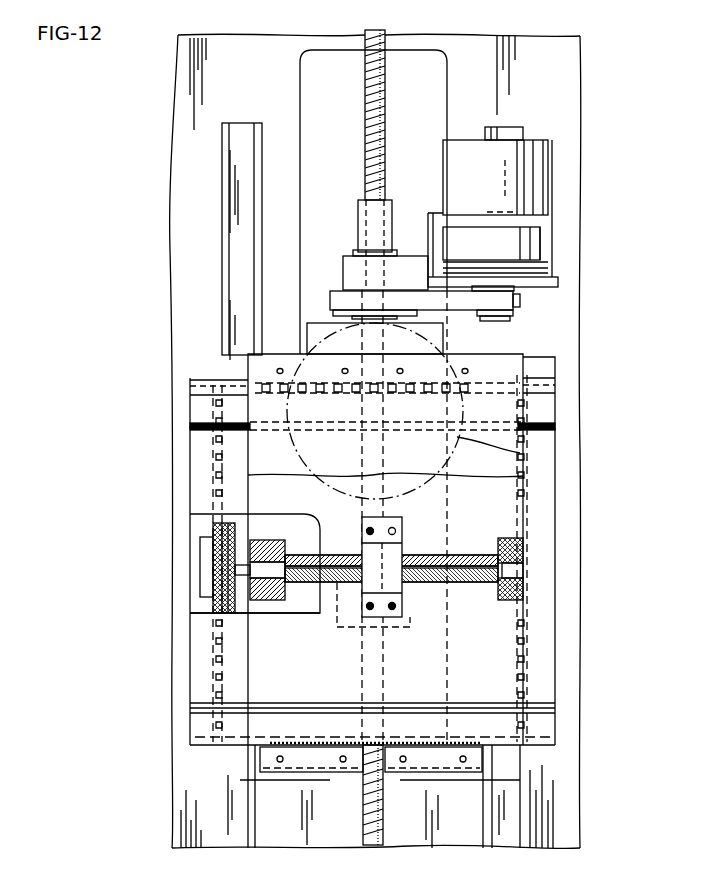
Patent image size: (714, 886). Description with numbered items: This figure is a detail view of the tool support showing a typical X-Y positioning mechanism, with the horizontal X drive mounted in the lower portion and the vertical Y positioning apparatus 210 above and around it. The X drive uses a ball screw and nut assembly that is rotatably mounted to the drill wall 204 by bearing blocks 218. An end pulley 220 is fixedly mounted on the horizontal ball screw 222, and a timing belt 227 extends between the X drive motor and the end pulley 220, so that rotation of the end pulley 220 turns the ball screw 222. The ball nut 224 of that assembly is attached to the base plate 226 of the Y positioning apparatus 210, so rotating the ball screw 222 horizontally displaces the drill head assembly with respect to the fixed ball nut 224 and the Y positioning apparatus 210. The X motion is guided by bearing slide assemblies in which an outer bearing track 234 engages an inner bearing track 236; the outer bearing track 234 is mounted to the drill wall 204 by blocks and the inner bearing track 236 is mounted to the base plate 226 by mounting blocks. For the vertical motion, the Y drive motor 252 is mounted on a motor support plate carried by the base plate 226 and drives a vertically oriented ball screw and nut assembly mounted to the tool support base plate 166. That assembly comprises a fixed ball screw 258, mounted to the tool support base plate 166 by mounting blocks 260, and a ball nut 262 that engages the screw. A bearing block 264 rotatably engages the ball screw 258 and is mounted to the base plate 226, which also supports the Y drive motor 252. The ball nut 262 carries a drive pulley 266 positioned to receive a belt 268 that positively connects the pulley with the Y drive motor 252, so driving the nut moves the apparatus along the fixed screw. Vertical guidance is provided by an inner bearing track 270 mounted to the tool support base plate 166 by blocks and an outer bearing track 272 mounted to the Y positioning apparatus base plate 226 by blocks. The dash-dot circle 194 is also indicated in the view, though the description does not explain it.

The tool support base plate 166 is at (258, 50).
The ball screw 258 is at (388, 36).
The inner bearing track 270 is at (523, 133).
The Y drive motor 252 is at (533, 176).
The Y positioning apparatus 210 is at (552, 202).
The ball nut 262 is at (333, 264).
The drive pulley 266 is at (337, 291).
The bearing block 264 is at (335, 315).
The belt 268 is at (503, 302).
The pitch circle 194 is at (478, 455).
The drill wall 204 is at (523, 366).
The inner bearing track 236 is at (200, 408).
The outer bearing track 272 is at (207, 489).
The end pulley 220 is at (210, 531).
The bearing blocks 218 is at (267, 602).
The ball screw 222 is at (468, 555).
The ball nut 224 is at (395, 530).
The mounting blocks 260 is at (405, 625).
The timing belt 227 is at (227, 613).
The base plate 226 is at (435, 667).
The outer bearing track 234 is at (483, 372).